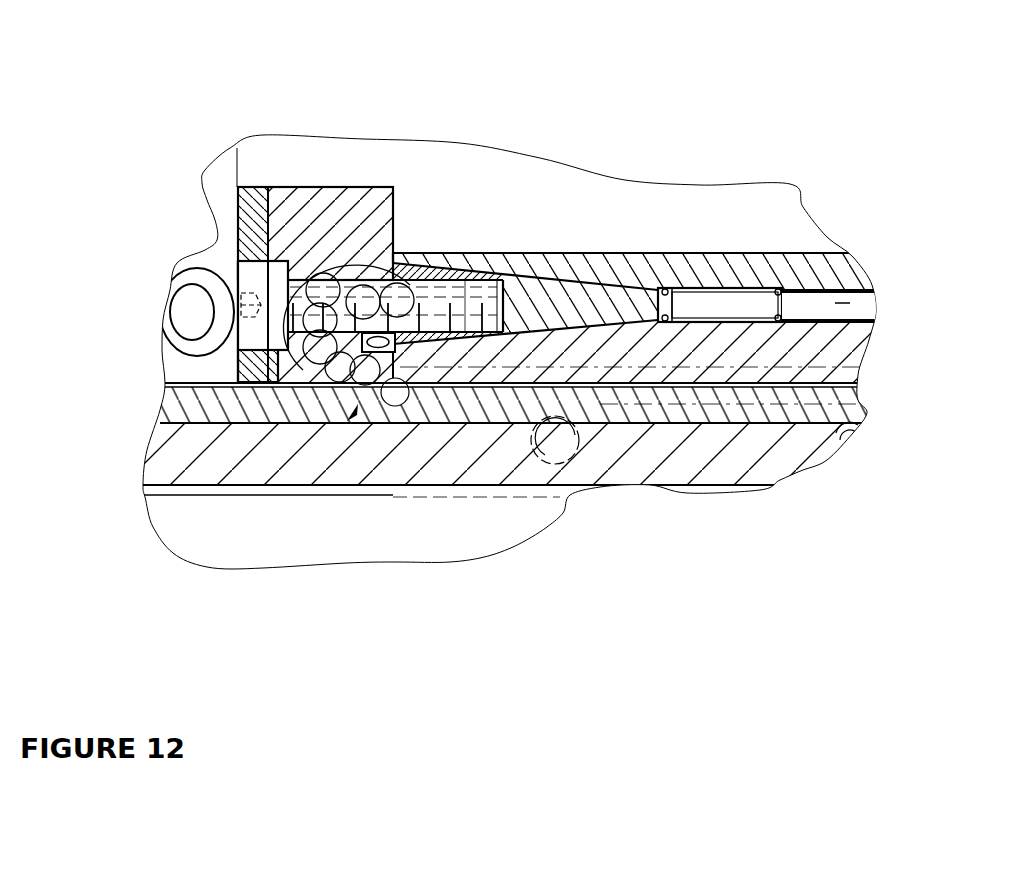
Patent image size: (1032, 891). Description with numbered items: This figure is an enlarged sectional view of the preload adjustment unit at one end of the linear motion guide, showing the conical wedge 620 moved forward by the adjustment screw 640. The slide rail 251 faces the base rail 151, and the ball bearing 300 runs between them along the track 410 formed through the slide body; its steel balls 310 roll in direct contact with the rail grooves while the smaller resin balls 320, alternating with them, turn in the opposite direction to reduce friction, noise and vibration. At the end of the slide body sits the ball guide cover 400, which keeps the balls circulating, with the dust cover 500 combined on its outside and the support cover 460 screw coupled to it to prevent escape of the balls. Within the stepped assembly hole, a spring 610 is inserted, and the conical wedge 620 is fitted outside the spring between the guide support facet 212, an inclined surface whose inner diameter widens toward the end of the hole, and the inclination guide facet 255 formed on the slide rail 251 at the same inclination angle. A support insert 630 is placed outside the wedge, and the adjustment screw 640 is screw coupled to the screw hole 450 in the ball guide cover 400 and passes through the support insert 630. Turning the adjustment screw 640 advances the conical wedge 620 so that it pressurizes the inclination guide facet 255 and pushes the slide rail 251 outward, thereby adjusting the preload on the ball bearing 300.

The base rail 151 is at (712, 395).
The guide support facet 212 is at (565, 272).
The slide rail 251 is at (763, 353).
The inclination guide facet 255 is at (575, 395).
The ball bearing 300 is at (357, 407).
The steel ball 310 is at (383, 355).
The resin ball 320 is at (395, 368).
The ball guide cover 400 is at (236, 262).
The track 410 is at (862, 267).
The screw hole 450 is at (300, 262).
The support cover 460 is at (236, 382).
The dust cover 500 is at (238, 210).
The spring 610 is at (765, 290).
The conical wedge 620 is at (576, 345).
The support insert 630 is at (452, 268).
The adjustment screw 640 is at (340, 290).